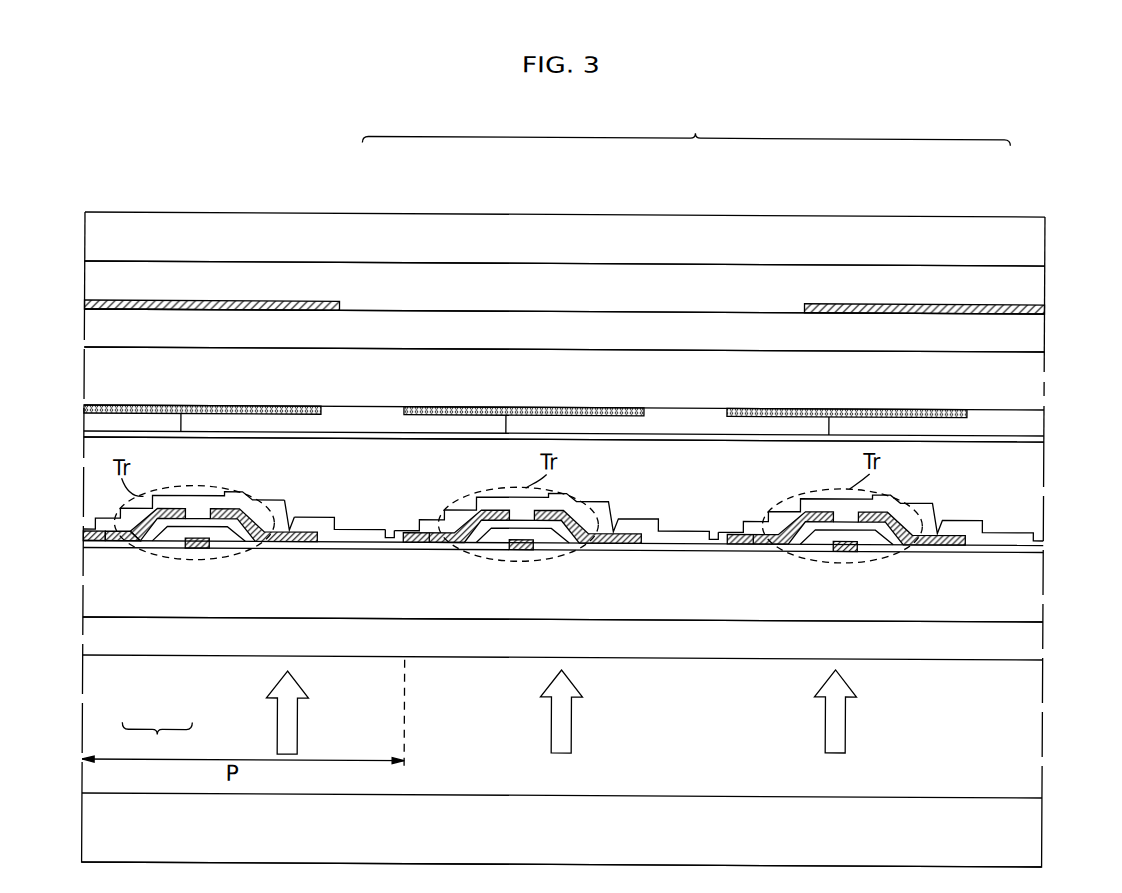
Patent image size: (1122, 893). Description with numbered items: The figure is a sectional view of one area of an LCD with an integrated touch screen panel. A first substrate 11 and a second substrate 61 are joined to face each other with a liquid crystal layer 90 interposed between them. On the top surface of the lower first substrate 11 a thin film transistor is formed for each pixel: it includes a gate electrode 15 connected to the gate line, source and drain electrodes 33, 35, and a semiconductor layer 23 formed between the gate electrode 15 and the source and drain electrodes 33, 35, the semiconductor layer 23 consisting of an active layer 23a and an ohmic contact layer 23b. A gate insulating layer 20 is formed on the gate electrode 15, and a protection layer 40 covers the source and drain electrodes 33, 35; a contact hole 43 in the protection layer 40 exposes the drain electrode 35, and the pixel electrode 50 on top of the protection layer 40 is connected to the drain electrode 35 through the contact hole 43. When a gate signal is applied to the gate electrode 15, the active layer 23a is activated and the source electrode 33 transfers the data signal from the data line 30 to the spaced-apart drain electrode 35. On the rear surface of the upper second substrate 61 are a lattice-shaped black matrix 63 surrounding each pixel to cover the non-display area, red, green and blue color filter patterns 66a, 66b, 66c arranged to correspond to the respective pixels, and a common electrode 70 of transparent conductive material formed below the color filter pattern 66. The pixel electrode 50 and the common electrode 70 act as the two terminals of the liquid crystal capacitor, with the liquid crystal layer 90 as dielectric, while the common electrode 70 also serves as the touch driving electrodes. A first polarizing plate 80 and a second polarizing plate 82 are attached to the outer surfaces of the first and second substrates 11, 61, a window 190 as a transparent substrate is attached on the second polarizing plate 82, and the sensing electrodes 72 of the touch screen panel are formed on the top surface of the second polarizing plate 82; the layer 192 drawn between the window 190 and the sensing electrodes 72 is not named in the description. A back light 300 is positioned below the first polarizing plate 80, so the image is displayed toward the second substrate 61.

The window 190 is at (1033, 235).
The upper substrate 192 is at (1033, 282).
The sensing electrodes 72 is at (150, 296).
The second polarizing plate 82 is at (1033, 330).
The second substrate 61 is at (1033, 380).
The color filter pattern 66 is at (565, 272).
The red color filter pattern 66a is at (373, 413).
The green color filter pattern 66b is at (695, 412).
The blue color filter pattern 66c is at (985, 411).
The black matrix 63 is at (207, 402).
The common electrode 70 is at (1036, 436).
The liquid crystal layer 90 is at (1033, 465).
The gate insulating layer 20 is at (345, 548).
The gate electrode 15 is at (200, 548).
The data line 30 is at (97, 546).
The semiconductor layer 23 is at (174, 641).
The active layer 23a is at (147, 546).
The ohmic contact layer 23b is at (168, 546).
The source electrode 33 is at (172, 496).
The drain electrode 35 is at (217, 502).
The contact hole 43 is at (293, 509).
The pixel electrode 50 is at (385, 520).
The protection layer 40 is at (345, 533).
The first substrate 11 is at (1033, 592).
The first polarizing plate 80 is at (1033, 640).
The back light 300 is at (1033, 823).